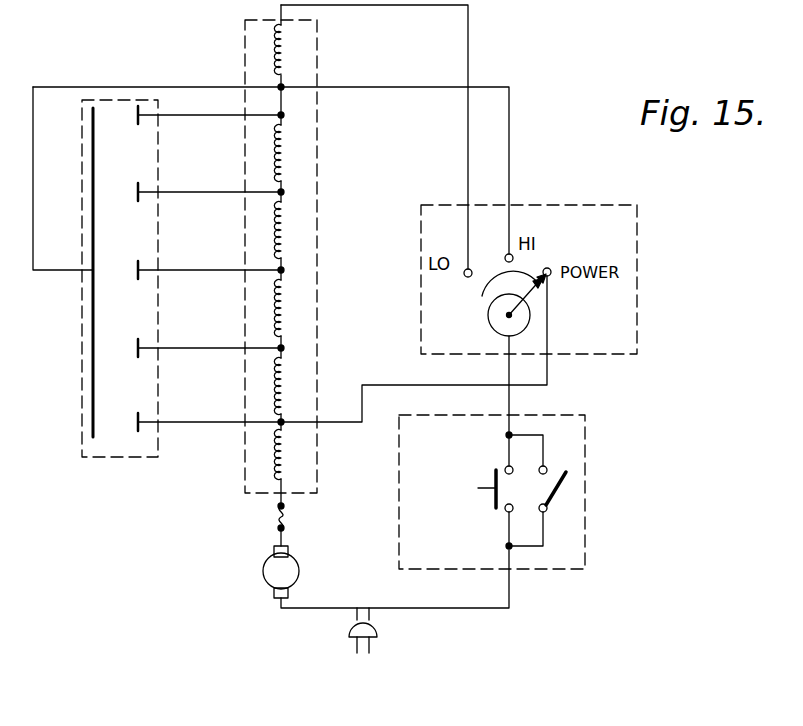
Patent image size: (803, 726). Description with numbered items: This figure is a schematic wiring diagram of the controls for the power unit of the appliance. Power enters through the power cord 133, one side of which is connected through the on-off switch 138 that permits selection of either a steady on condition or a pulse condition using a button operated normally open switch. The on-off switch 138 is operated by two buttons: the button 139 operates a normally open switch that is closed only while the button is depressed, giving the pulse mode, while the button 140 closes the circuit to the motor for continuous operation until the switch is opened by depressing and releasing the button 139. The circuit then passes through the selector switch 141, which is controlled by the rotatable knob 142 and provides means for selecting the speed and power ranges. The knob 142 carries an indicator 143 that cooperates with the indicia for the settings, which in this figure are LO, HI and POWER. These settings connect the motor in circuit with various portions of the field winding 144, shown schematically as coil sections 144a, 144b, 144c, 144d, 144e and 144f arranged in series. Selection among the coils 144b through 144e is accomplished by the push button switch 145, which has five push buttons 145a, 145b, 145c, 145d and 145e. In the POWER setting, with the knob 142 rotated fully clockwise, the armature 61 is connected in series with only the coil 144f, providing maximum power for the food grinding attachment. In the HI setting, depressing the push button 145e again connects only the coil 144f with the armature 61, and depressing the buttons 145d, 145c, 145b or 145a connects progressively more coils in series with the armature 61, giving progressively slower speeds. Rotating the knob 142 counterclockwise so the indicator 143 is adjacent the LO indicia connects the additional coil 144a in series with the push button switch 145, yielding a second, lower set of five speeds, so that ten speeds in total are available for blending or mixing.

The armature 61 is at (272, 580).
The power cord 133 is at (373, 618).
The on-off switch 138 is at (585, 536).
The button 139 is at (492, 510).
The button 140 is at (560, 488).
The selector switch 141 is at (637, 226).
The rotatable knob 142 is at (494, 327).
The indicator 143 is at (488, 289).
The field winding 144 is at (245, 48).
The coil section 144a is at (288, 60).
The coil section 144b is at (288, 148).
The coil section 144c is at (288, 232).
The coil section 144d is at (288, 310).
The coil section 144e is at (288, 380).
The coil section 144f is at (288, 468).
The push button switch 145 is at (113, 457).
The push button 145a is at (141, 119).
The push button 145b is at (141, 196).
The push button 145c is at (141, 274).
The push button 145d is at (141, 352).
The push button 145e is at (141, 426).